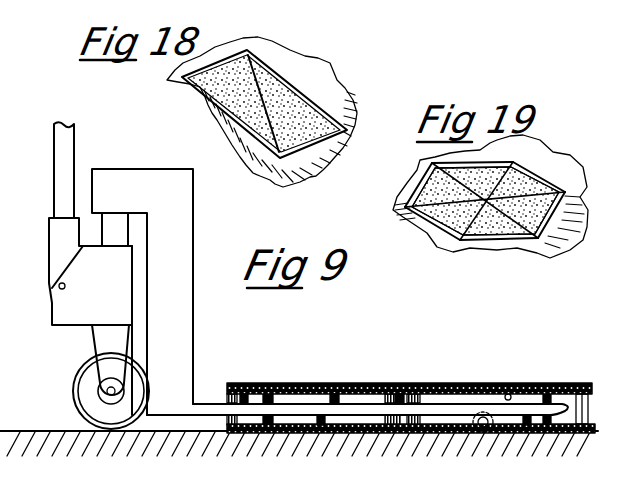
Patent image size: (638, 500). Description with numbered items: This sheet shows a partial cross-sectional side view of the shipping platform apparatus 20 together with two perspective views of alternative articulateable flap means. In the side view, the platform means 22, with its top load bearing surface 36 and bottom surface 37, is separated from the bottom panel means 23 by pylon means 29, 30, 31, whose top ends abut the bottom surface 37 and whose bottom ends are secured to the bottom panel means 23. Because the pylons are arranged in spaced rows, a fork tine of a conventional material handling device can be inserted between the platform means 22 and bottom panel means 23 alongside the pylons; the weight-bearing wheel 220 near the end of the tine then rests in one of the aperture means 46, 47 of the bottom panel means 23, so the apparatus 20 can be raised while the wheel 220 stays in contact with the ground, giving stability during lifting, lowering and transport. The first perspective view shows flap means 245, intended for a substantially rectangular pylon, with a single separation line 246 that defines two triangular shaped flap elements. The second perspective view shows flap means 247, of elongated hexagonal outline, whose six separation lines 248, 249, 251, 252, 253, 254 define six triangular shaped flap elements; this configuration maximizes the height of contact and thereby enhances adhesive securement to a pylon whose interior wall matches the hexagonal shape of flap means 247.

In FIG. 9, the shipping platform apparatus 20 is at (302, 364).
In FIG. 9, the platform means 22 is at (450, 378).
In FIG. 9, the bottom panel means 23 is at (365, 434).
In FIG. 9, the pylon means 29 is at (571, 383).
In FIG. 9, the pylon means 30 is at (399, 383).
In FIG. 9, the pylon means 31 is at (243, 383).
In FIG. 9, the top load bearing surface 36 is at (337, 383).
In FIG. 9, the bottom surface 37 is at (509, 393).
In FIG. 9, the aperture means 46 is at (527, 434).
In FIG. 9, the aperture means 47 is at (321, 434).
In FIG. 9, the wheel 220 is at (475, 434).
In FIG. 18, the flap means 245 is at (206, 103).
In FIG. 18, the separation line 246 is at (291, 103).
In FIG. 19, the flap means 247 is at (492, 160).
In FIG. 19, the separation line 248 is at (424, 182).
In FIG. 19, the separation line 249 is at (424, 222).
In FIG. 19, the separation line 251 is at (468, 242).
In FIG. 19, the separation line 252 is at (519, 242).
In FIG. 19, the separation line 253 is at (545, 210).
In FIG. 19, the separation line 254 is at (528, 169).